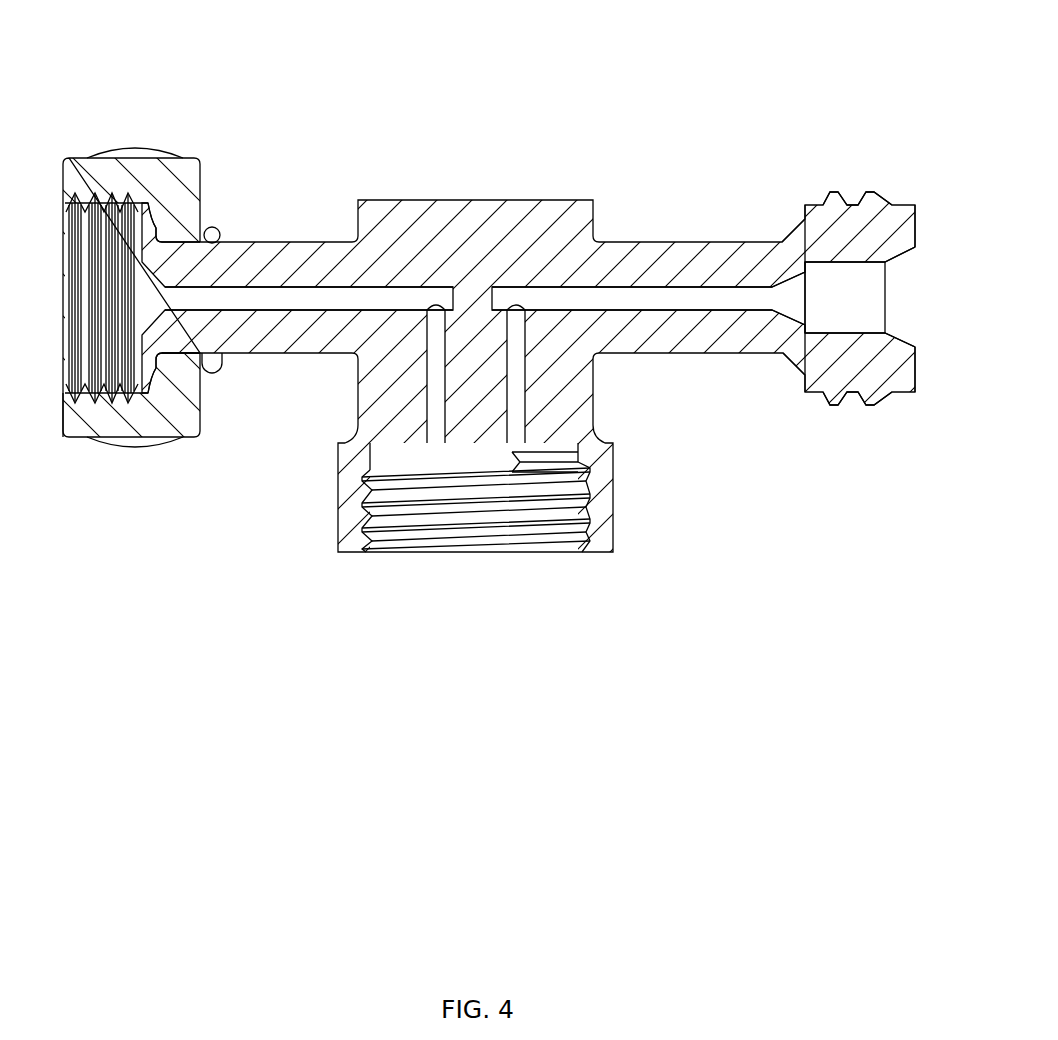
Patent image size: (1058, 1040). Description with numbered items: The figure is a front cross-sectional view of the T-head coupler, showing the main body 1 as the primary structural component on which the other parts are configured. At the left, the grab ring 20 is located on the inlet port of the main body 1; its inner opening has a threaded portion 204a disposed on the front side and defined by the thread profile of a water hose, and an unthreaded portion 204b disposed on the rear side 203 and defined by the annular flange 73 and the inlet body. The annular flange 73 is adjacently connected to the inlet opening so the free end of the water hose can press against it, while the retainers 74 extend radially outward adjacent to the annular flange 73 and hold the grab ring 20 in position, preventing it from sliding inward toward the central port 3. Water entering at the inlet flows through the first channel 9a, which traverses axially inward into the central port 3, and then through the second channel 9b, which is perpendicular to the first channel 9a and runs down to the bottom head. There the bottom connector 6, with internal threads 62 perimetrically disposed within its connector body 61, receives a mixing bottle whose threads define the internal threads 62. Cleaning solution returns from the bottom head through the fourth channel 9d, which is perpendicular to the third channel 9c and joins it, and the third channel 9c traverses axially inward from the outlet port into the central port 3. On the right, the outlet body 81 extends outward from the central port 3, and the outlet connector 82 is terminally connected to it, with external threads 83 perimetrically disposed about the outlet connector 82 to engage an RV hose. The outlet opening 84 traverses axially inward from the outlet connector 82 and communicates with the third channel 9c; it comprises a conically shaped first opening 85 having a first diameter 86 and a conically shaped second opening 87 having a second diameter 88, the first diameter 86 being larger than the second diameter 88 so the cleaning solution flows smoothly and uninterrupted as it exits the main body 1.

The main body 1 is at (529, 362).
The central port 3 is at (455, 225).
The bottom connector 6 is at (466, 543).
The connector body 61 is at (612, 545).
The internal threads 62 is at (460, 535).
The first channel 9a is at (330, 295).
The second channel 9b is at (432, 348).
The third channel 9c is at (625, 295).
The fourth channel 9d is at (520, 345).
The grab ring 20 is at (250, 267).
The annular flange 73 is at (158, 208).
The retainer 74 is at (216, 226).
The rear side 203 is at (206, 388).
The threaded portion 204a is at (110, 398).
The unthreaded portion 204b is at (180, 405).
The outlet body 81 is at (718, 350).
The outlet connector 82 is at (834, 186).
The external threads 83 is at (856, 197).
The outlet opening 84 is at (838, 259).
The first opening 85 is at (894, 322).
The first diameter 86 is at (927, 405).
The second opening 87 is at (775, 353).
The second diameter 88 is at (824, 264).